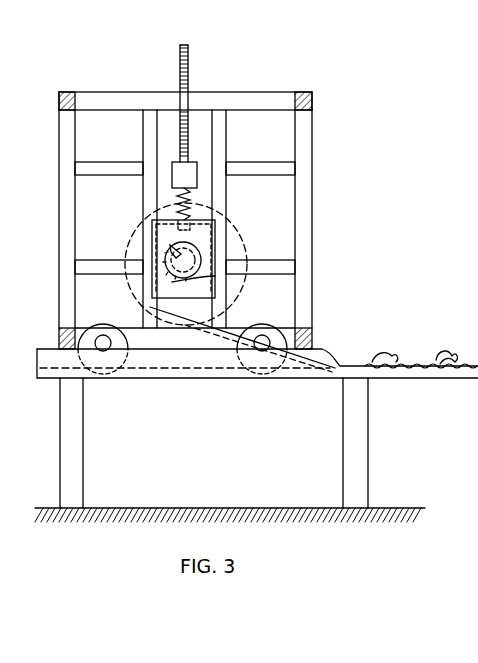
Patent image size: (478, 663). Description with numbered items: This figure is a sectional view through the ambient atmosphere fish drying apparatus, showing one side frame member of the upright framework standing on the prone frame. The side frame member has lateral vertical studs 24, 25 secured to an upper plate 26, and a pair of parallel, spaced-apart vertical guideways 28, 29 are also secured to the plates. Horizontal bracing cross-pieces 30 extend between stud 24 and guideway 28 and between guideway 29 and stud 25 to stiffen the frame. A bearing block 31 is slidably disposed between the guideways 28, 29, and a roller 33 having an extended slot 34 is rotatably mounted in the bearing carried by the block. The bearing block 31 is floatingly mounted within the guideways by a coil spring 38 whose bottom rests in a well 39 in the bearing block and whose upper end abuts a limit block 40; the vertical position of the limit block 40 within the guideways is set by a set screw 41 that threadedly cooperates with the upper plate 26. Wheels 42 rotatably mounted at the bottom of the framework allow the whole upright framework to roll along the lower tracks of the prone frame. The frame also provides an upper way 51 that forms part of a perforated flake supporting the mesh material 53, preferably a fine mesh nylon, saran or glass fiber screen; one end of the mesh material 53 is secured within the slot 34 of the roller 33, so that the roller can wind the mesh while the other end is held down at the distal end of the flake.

The lateral vertical stud 24 is at (59, 272).
The lateral vertical stud 25 is at (312, 228).
The upper plate 26 is at (268, 92).
The vertical guideway 28 is at (150, 114).
The vertical guideway 29 is at (218, 114).
The horizontal bracing cross-piece 30 is at (88, 266).
The bearing block 31 is at (158, 292).
The roller 33 is at (198, 256).
The extended slot 34 is at (173, 250).
The coil spring 38 is at (195, 198).
The well 39 is at (170, 220).
The limit block 40 is at (175, 172).
The set screw 41 is at (180, 47).
The wheel 42 is at (82, 323).
The upper way 51 is at (200, 379).
The mesh material 53 is at (216, 290).